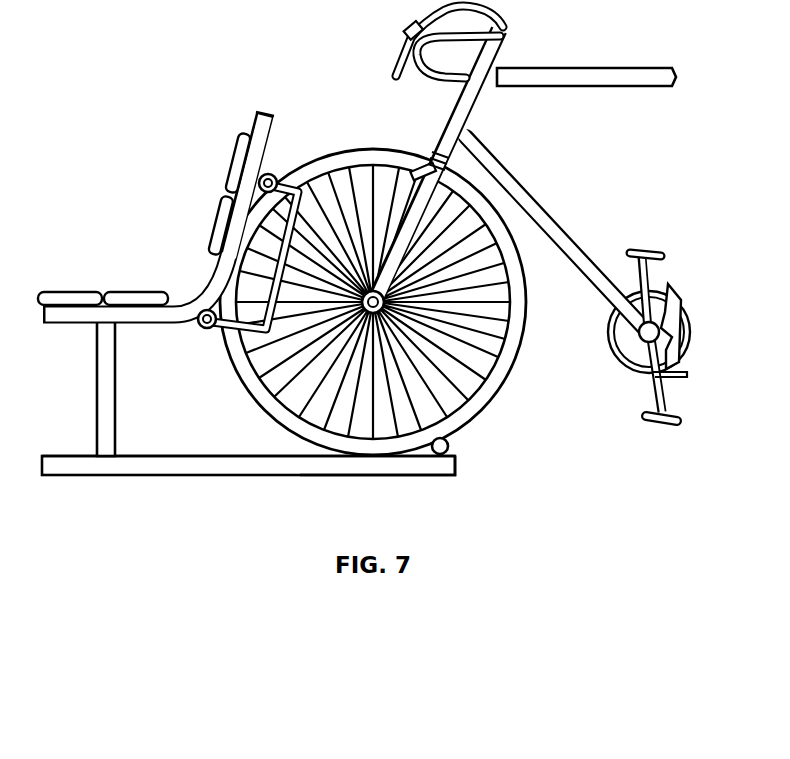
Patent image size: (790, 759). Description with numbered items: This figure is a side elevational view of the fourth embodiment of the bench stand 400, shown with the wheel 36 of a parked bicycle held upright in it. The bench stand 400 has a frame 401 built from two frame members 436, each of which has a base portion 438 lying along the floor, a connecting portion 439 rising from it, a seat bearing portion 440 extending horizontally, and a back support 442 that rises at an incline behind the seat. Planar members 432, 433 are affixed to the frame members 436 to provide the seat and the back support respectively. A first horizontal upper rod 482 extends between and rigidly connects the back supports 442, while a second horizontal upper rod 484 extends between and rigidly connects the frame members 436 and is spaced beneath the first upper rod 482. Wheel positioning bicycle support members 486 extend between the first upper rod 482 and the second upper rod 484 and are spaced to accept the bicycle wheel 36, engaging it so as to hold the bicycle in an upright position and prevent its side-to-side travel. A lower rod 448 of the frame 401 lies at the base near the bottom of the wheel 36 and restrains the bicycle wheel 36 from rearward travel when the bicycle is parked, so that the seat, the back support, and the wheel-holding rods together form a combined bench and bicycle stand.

The bicycle wheel 36 is at (377, 148).
The bench stand 400 is at (278, 297).
The frame 401 is at (377, 477).
The planar member 432 is at (70, 291).
The planar member 433 is at (232, 160).
The frame member 436 is at (123, 477).
The base portion 438 is at (155, 455).
The connecting portion 439 is at (97, 398).
The seat bearing portion 440 is at (157, 324).
The back support 442 is at (277, 128).
The lower rod 448 is at (453, 438).
The first horizontal upper rod 482 is at (278, 175).
The second horizontal upper rod 484 is at (200, 327).
The wheel positioning bicycle support member 486 is at (223, 363).